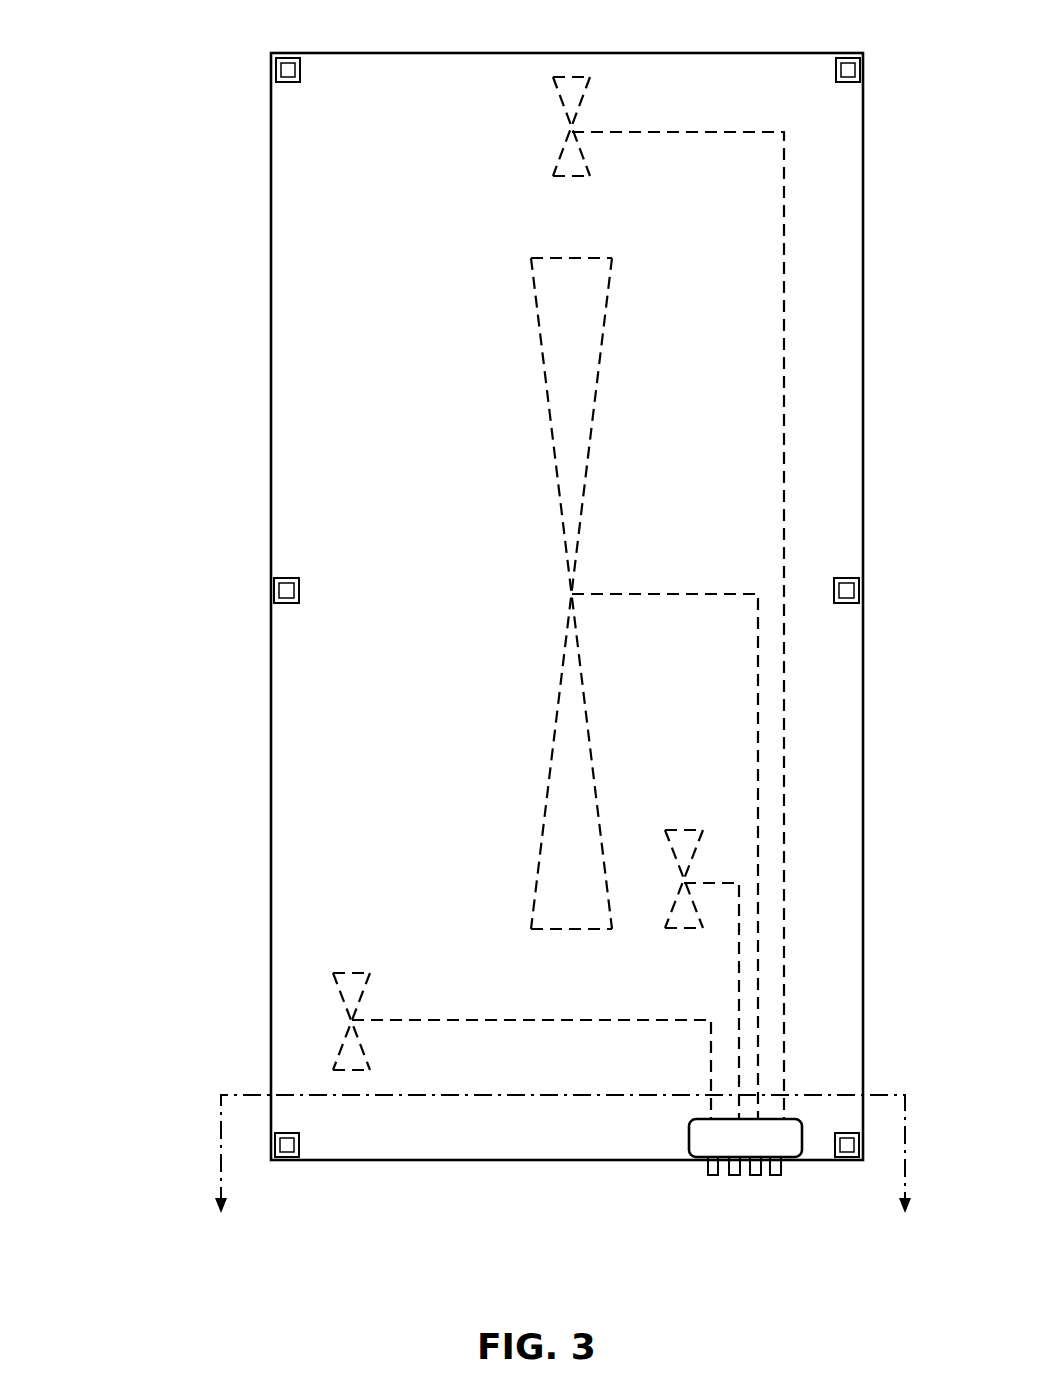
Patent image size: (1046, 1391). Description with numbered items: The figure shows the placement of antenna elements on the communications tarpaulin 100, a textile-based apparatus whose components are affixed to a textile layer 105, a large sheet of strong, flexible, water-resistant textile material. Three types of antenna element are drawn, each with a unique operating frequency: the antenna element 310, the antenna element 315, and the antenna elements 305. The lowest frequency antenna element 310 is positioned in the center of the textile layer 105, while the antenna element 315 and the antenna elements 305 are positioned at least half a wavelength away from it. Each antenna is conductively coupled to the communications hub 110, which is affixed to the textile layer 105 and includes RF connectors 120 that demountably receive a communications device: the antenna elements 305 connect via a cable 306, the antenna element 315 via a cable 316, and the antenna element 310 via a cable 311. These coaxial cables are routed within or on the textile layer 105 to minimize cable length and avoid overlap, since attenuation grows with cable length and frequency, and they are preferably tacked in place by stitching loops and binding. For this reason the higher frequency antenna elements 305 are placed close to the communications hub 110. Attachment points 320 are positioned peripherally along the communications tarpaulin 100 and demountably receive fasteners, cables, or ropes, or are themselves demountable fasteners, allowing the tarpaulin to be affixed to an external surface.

The communications tarpaulin 100 is at (504, 608).
The textile layer 105 is at (373, 278).
The communications hub 110 is at (767, 1152).
The RF connector 120 is at (713, 1181).
The antenna elements 305 is at (518, 914).
The cable 306 is at (545, 1001).
The antenna element 310 is at (592, 302).
The cable 311 is at (665, 819).
The antenna element 315 is at (530, 126).
The cable 316 is at (678, 625).
The attachment points 320 is at (619, 607).